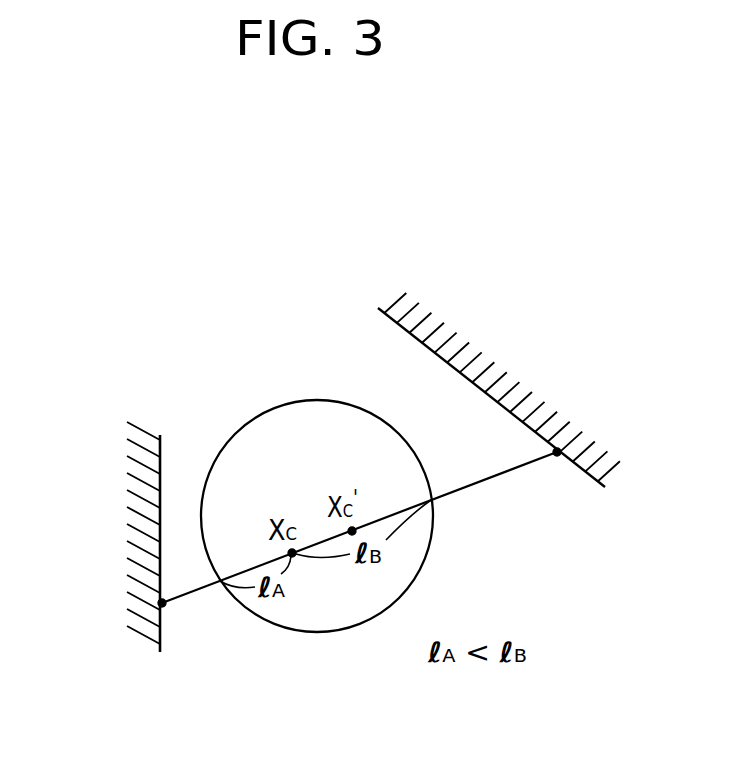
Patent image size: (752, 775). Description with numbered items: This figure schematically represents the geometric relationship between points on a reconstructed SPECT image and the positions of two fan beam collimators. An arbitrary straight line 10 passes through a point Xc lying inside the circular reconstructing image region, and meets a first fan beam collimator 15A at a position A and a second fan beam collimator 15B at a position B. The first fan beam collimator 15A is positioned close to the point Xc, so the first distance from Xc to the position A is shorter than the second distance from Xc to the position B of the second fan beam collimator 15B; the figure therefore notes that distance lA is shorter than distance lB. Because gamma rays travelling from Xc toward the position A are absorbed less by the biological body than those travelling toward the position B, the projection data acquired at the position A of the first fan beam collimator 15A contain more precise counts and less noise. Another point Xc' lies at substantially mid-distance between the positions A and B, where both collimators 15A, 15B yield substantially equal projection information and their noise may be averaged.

The straight line 10 is at (464, 486).
The first fan beam collimator 15A is at (133, 473).
The second fan beam collimator 15B is at (462, 340).
The position of first fan beam collimator A is at (164, 606).
The position of second fan beam collimator B is at (555, 455).